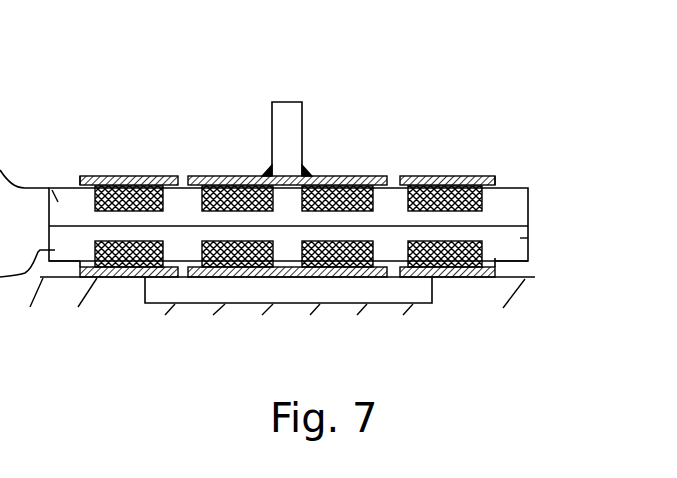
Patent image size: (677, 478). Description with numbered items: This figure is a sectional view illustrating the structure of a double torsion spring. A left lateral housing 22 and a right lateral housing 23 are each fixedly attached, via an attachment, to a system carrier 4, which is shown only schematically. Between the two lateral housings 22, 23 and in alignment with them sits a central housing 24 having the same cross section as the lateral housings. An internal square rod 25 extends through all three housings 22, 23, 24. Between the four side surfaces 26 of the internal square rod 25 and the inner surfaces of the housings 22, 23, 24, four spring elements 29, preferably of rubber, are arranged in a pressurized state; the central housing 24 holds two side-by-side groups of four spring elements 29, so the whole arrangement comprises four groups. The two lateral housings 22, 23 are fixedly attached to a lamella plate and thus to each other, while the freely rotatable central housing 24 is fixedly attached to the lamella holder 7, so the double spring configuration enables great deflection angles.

The system carrier 4 is at (333, 347).
The lamella holder 7 is at (272, 115).
The left lateral housing 22 is at (95, 177).
The right lateral housing 23 is at (487, 176).
The central housing 24 is at (198, 176).
The internal square rod 25 is at (562, 142).
The side surfaces of the internal square rod 26 is at (182, 200).
The spring elements 29 is at (138, 176).